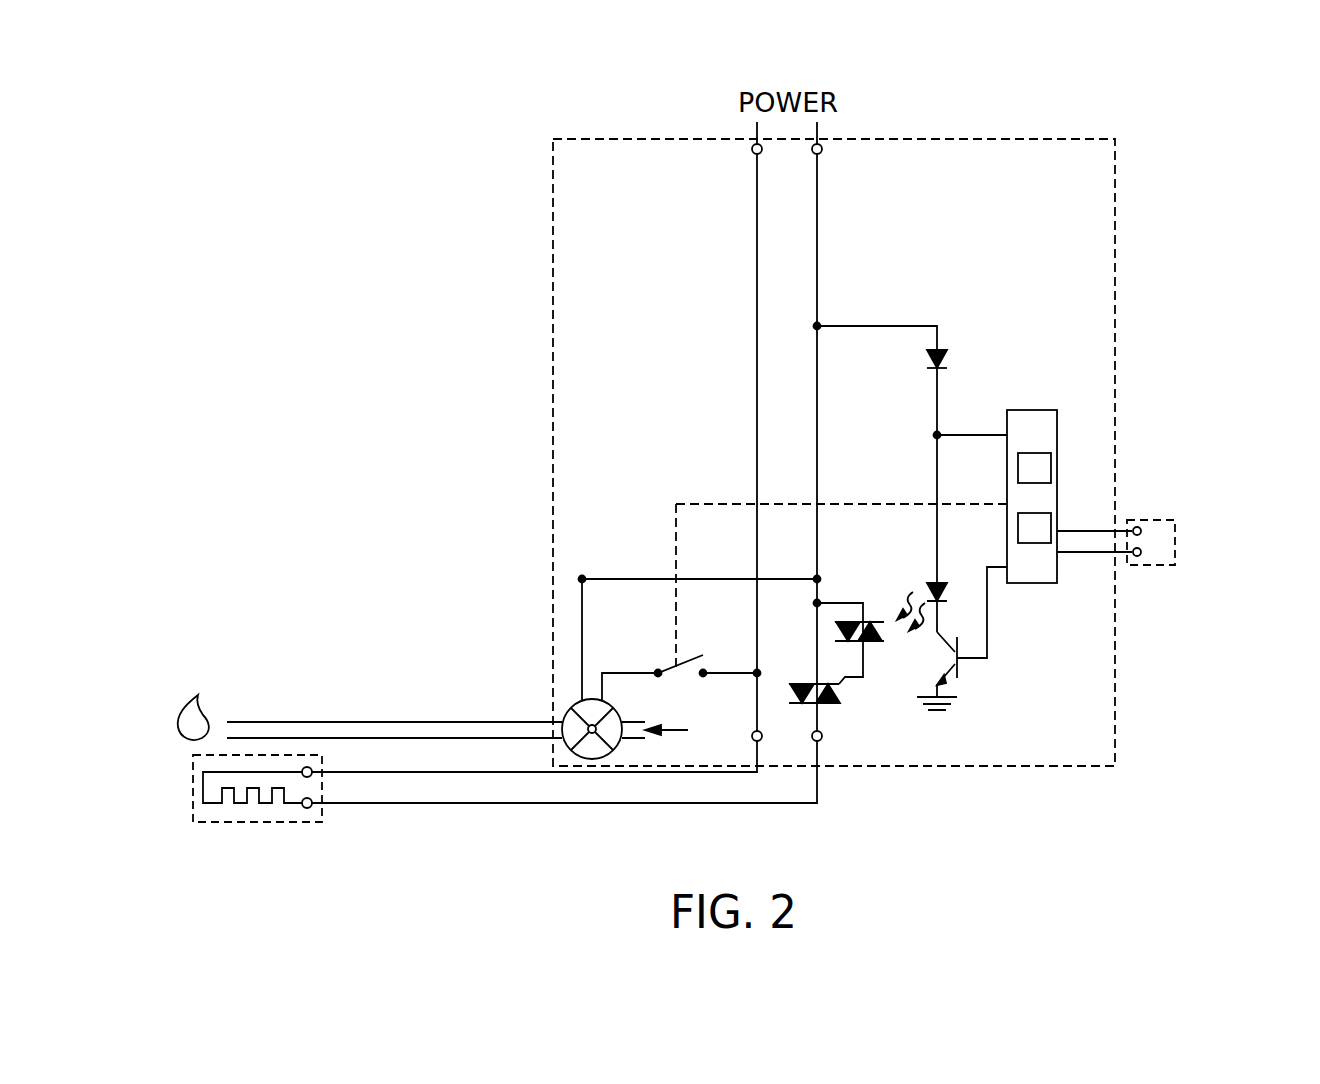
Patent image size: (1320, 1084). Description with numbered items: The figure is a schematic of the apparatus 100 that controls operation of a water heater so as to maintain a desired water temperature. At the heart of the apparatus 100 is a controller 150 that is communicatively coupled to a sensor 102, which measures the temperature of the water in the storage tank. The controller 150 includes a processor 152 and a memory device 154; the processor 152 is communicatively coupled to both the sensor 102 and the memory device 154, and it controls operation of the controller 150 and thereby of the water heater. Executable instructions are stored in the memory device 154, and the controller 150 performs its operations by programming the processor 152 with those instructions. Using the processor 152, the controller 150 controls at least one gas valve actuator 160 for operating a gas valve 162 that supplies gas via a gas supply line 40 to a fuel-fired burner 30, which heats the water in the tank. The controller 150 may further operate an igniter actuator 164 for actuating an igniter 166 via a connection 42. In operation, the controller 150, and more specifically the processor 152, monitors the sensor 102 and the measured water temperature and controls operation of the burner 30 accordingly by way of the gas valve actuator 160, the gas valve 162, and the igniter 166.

The apparatus 100 is at (621, 139).
The fuel-fired burner 30 is at (215, 702).
The gas supply line 40 is at (520, 738).
The connection 42 is at (403, 803).
The sensor 102 is at (1157, 565).
The controller 150 is at (1107, 467).
The processor 152 is at (1051, 468).
The memory device 154 is at (1051, 520).
The gas valve actuator 160 is at (670, 677).
The gas valve 162 is at (577, 698).
The igniter actuator 164 is at (984, 661).
The igniter 166 is at (277, 822).